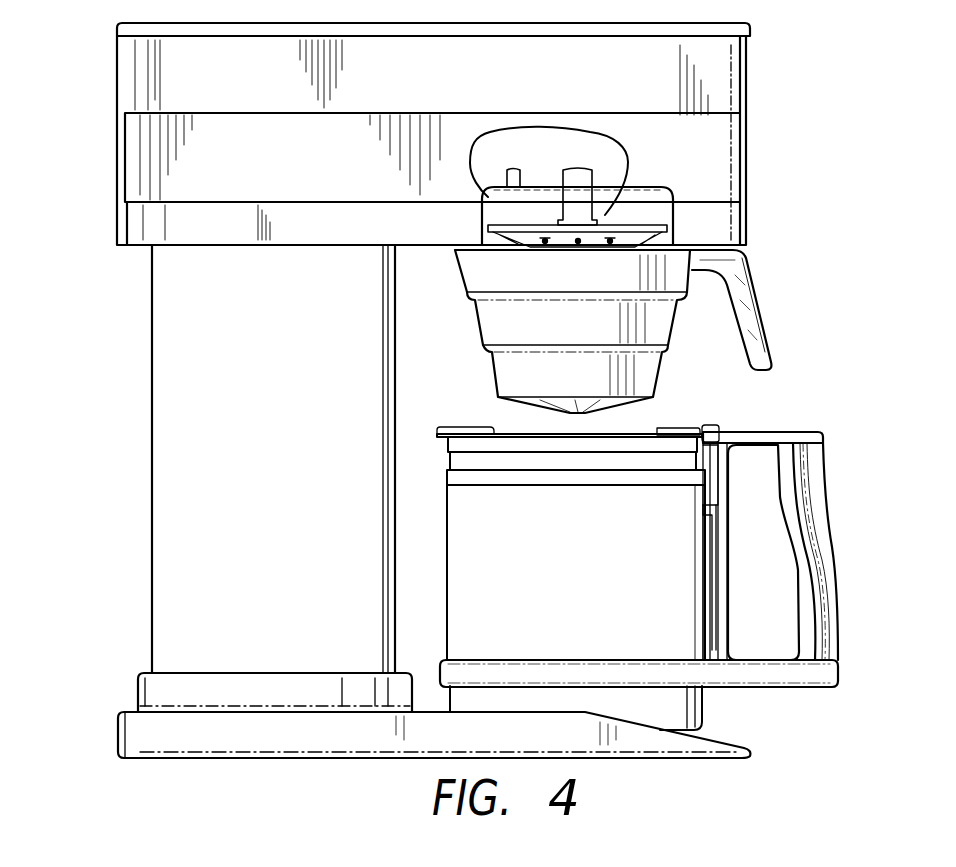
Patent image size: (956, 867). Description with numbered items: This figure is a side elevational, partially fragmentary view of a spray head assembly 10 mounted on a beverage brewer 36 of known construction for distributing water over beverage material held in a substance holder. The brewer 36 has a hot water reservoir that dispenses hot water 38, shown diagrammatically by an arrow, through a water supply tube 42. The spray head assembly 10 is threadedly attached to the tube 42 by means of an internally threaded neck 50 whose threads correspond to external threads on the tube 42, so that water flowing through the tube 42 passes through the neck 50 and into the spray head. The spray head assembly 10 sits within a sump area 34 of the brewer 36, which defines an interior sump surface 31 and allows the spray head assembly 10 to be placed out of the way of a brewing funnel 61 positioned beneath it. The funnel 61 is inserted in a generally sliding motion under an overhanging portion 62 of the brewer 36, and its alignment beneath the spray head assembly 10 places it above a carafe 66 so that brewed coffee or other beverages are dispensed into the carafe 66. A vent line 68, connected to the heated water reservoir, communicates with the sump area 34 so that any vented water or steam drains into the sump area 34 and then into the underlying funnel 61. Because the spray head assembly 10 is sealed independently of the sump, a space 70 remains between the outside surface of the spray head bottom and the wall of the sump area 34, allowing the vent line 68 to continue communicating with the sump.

The spray head assembly 10 is at (463, 390).
The interior sump surface 31 is at (532, 183).
The sump area 34 is at (638, 227).
The brewer 36 is at (93, 227).
The hot water 38 is at (583, 183).
The water supply tube 42 is at (580, 180).
The neck 50 is at (598, 222).
The funnel 61 is at (767, 345).
The overhanging portion 62 is at (717, 82).
The carafe 66 is at (835, 553).
The vent line 68 is at (506, 185).
The space 70 is at (483, 232).